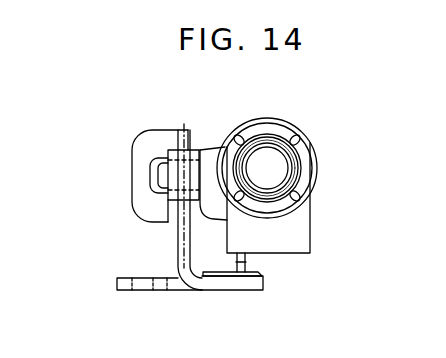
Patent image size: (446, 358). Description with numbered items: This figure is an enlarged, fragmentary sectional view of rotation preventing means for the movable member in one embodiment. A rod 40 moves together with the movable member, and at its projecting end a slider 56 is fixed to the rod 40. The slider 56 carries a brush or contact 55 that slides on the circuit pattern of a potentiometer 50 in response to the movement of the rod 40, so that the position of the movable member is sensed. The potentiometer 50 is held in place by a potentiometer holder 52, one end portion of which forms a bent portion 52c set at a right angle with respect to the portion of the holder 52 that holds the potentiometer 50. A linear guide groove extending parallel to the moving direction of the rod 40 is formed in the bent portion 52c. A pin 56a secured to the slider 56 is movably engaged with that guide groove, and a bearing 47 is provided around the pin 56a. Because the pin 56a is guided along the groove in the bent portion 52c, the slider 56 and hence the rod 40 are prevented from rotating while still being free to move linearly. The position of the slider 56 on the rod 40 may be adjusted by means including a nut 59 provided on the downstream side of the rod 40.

The rod 40 is at (273, 180).
The bearing 47 is at (189, 149).
The potentiometer 50 is at (265, 273).
The potentiometer holder 52 is at (235, 283).
The bent portion of the holder 52c is at (178, 243).
The contact 55 is at (246, 261).
The slider 56 is at (320, 175).
The pin 56a is at (160, 176).
The nut 59 is at (293, 155).